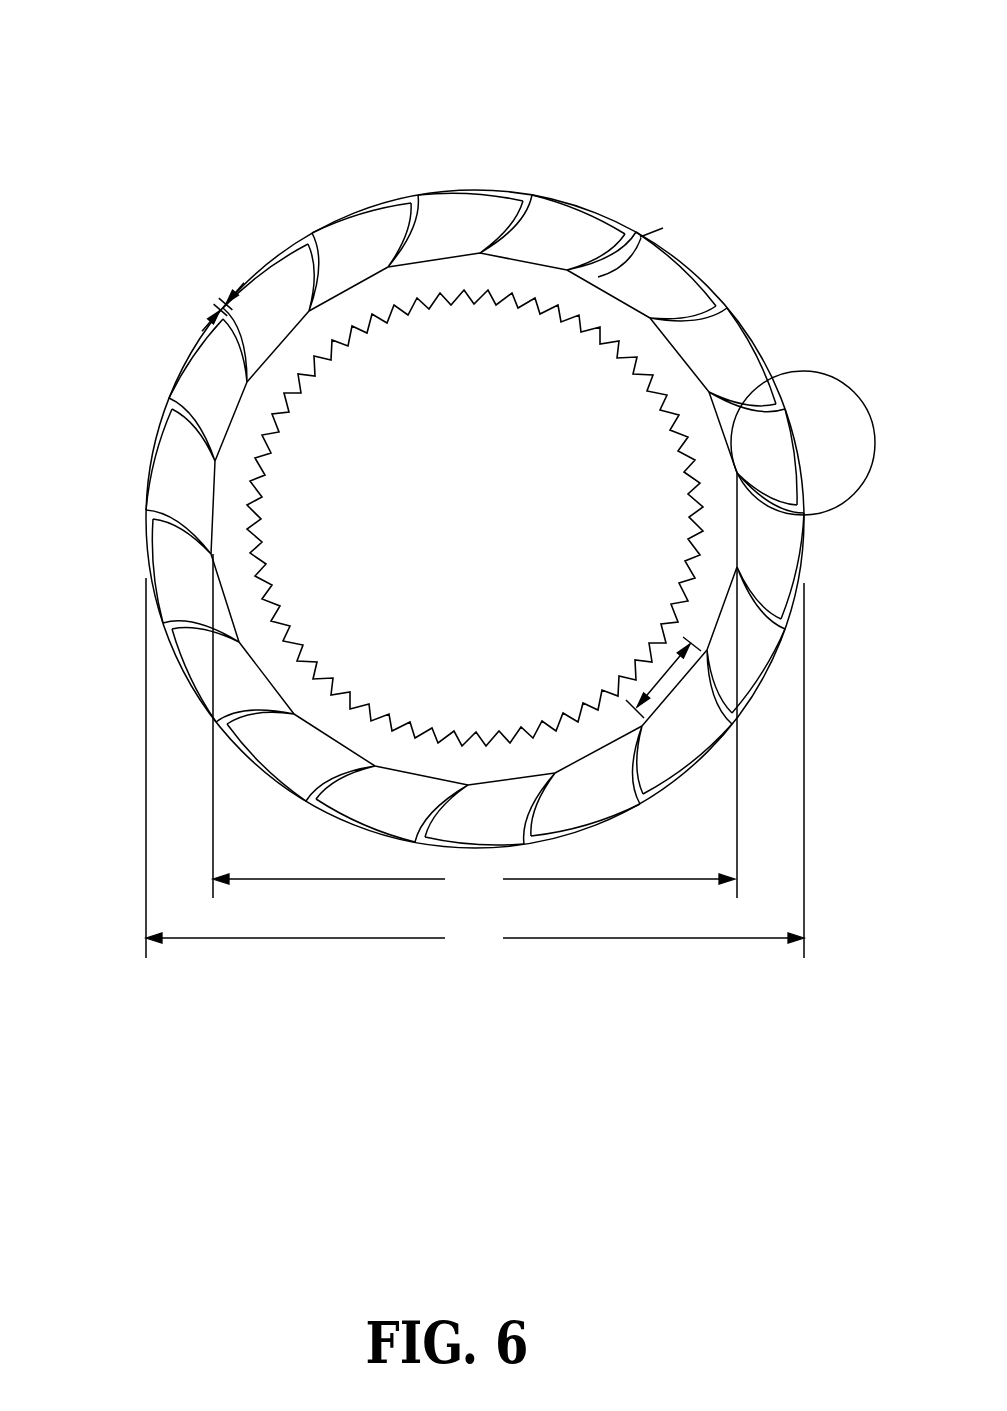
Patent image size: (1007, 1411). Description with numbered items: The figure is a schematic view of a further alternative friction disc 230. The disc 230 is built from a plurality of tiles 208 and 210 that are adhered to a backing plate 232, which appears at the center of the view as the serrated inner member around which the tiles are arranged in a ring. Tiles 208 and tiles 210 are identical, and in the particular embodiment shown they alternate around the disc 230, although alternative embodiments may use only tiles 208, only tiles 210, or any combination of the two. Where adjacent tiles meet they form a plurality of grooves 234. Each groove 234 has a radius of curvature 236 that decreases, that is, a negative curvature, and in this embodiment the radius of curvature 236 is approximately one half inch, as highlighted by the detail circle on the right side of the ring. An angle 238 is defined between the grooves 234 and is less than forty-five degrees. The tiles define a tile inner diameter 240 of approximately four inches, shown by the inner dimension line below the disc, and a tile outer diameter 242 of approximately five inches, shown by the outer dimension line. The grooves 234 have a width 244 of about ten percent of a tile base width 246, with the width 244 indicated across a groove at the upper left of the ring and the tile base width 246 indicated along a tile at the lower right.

The friction disc 230 is at (288, 166).
The tiles 208 is at (290, 268).
The tiles 210 is at (203, 373).
The backing plate 232 is at (452, 273).
The grooves 234 is at (424, 193).
The radius of curvature 236 is at (510, 223).
The angle 238 is at (585, 276).
The tile inner diameter 240 is at (475, 726).
The tile outer diameter 242 is at (475, 768).
The width 244 is at (218, 297).
The tile base width 246 is at (652, 673).